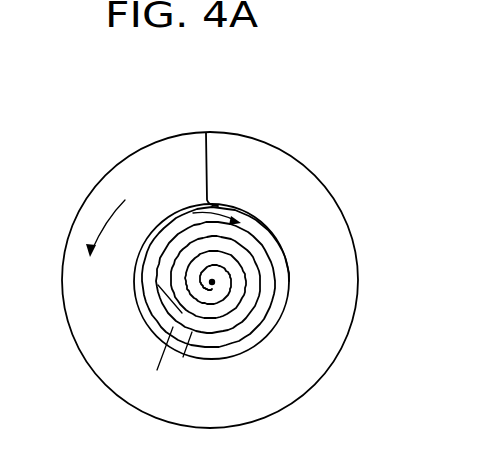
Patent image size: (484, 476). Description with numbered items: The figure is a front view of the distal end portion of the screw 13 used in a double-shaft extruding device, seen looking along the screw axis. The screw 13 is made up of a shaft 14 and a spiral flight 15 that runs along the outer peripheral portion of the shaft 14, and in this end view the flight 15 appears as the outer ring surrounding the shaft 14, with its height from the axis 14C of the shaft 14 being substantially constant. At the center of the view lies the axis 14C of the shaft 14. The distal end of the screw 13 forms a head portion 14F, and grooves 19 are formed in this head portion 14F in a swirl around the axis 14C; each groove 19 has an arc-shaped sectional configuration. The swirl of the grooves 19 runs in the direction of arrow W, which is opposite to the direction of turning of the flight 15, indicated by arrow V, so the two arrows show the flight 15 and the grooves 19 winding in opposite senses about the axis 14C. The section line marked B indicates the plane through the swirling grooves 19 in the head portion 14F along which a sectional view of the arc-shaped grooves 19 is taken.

The screw 13 is at (237, 230).
The shaft 14 is at (288, 225).
The flight 15 is at (276, 152).
The head portion 14F is at (275, 303).
The axis 14C is at (214, 284).
The grooves 19 is at (192, 332).
The direction of turning of the flight V is at (103, 218).
The swirl direction of the grooves W is at (223, 203).
The section line B- B is at (155, 284).